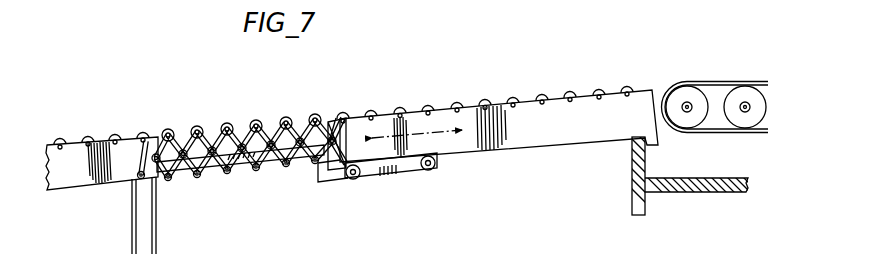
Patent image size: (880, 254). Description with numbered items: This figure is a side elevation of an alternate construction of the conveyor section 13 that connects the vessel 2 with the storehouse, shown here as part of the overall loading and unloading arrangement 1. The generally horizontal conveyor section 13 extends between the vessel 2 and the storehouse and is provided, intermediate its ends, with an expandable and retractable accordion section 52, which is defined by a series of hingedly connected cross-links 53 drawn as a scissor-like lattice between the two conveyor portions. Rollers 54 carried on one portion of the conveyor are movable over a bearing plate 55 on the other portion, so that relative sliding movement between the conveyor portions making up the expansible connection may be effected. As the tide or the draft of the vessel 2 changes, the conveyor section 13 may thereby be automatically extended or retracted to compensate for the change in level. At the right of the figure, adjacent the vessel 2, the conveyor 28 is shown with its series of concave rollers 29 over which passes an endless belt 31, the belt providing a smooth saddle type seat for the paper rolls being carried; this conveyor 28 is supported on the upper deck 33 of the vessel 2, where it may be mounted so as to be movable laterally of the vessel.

The apparatus 1 is at (340, 249).
The vessel 2 is at (629, 184).
The conveyor section 13 is at (497, 99).
The conveyor 28 is at (715, 110).
The concave rollers 29 is at (741, 114).
The endless belt 31 is at (726, 82).
The upper deck 33 is at (692, 188).
The accordion section 52 is at (184, 126).
The cross-links 53 is at (258, 142).
The rollers 54 is at (347, 177).
The bearing plate 55 is at (398, 170).